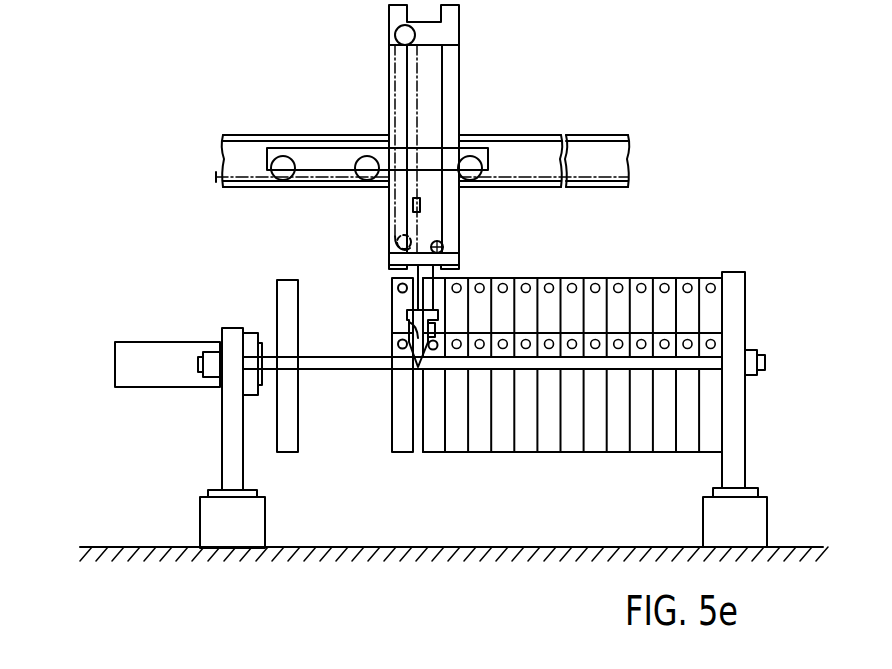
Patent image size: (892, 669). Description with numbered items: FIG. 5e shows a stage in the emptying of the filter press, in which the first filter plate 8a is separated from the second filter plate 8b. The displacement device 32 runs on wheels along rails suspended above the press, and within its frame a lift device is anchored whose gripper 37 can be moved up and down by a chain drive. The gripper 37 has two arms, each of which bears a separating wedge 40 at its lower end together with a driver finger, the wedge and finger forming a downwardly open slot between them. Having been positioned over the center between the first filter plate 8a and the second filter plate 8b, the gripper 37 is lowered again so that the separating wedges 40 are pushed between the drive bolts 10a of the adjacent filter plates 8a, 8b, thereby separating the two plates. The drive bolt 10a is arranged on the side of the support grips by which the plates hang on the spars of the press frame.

The displacement device 32 is at (459, 85).
The gripper 37 is at (443, 247).
The separating wedge 40 is at (410, 325).
The drive bolt 10a is at (436, 372).
The first filter plate 8a is at (402, 452).
The second filter plate 8b is at (430, 452).